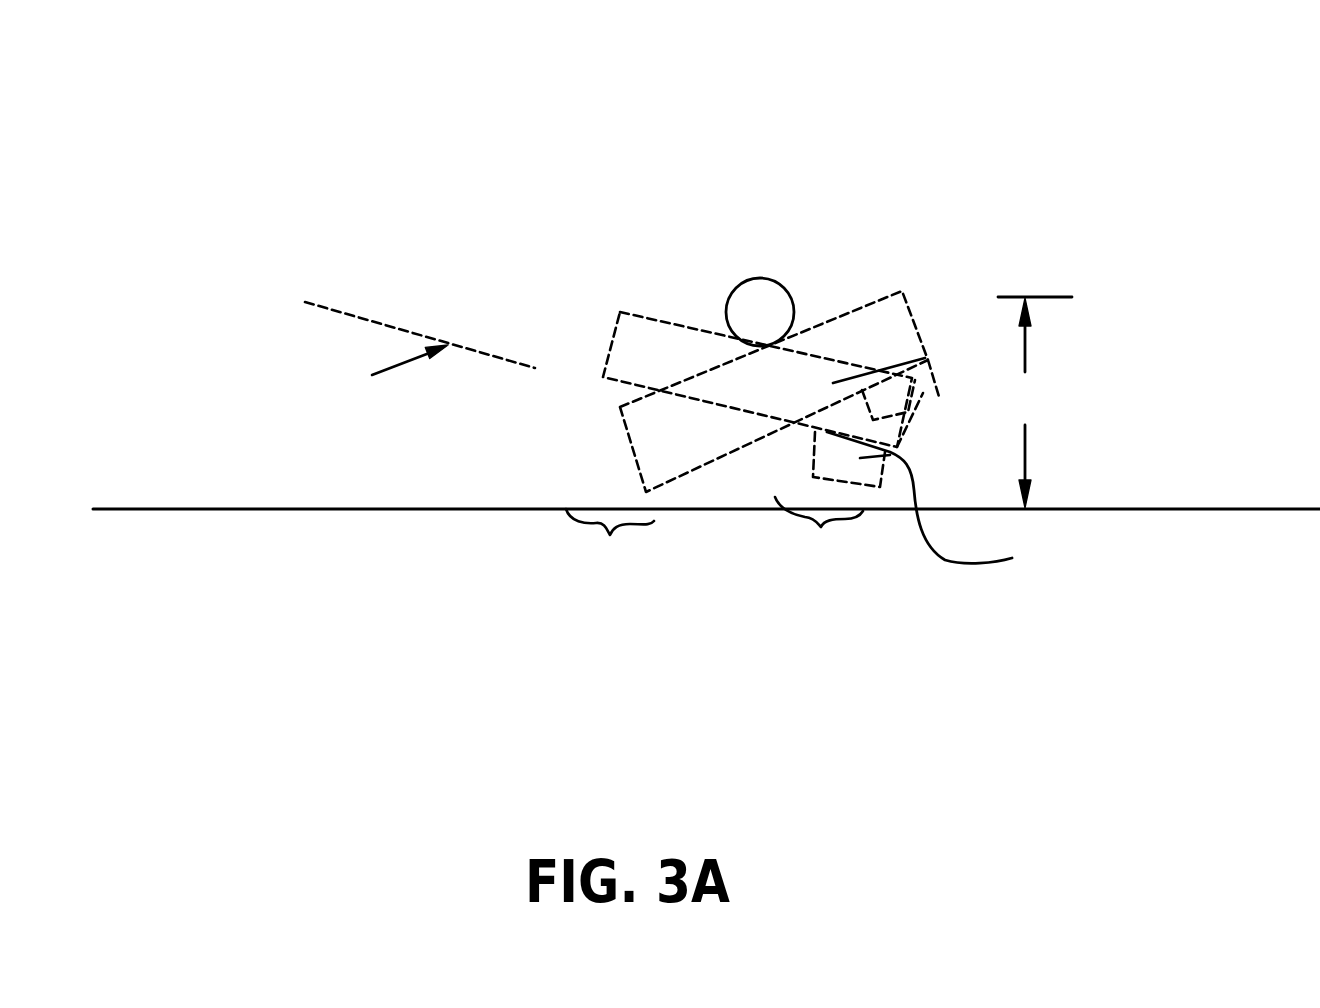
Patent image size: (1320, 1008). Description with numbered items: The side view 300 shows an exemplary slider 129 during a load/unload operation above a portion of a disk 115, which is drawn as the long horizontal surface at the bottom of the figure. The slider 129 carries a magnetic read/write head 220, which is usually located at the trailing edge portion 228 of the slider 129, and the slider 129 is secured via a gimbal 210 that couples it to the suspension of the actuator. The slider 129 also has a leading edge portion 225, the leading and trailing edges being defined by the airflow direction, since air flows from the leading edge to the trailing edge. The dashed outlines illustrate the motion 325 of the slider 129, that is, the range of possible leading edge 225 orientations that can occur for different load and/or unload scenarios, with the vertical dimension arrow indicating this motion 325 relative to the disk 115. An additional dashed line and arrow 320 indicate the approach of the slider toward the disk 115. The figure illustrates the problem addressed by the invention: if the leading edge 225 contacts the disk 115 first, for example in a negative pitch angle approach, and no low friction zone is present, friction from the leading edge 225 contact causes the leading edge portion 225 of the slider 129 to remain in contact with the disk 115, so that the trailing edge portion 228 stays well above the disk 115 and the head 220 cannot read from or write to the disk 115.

The side view 300 is at (701, 85).
The disk 115 is at (203, 509).
The fall trajectory 320 is at (313, 509).
The gimbal 210 is at (750, 278).
The slider 129 is at (883, 327).
The head 220 is at (919, 392).
The leading edge portion 225 is at (610, 547).
The trailing edge portion 228 is at (830, 508).
The motion 325 is at (1035, 402).